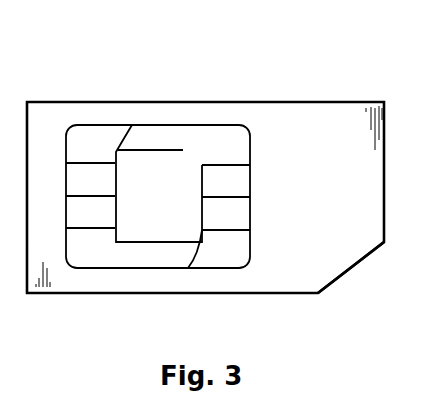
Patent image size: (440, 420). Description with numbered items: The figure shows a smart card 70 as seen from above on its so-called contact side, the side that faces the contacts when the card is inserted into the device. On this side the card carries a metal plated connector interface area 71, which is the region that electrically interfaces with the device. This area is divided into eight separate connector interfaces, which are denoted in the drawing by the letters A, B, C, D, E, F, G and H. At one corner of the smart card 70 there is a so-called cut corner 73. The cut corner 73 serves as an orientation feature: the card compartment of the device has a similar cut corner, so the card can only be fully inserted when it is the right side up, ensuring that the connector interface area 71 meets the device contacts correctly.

The smart card 70 is at (50, 102).
The metal plated connector interface area 71 is at (183, 125).
The cut corner 73 is at (355, 272).